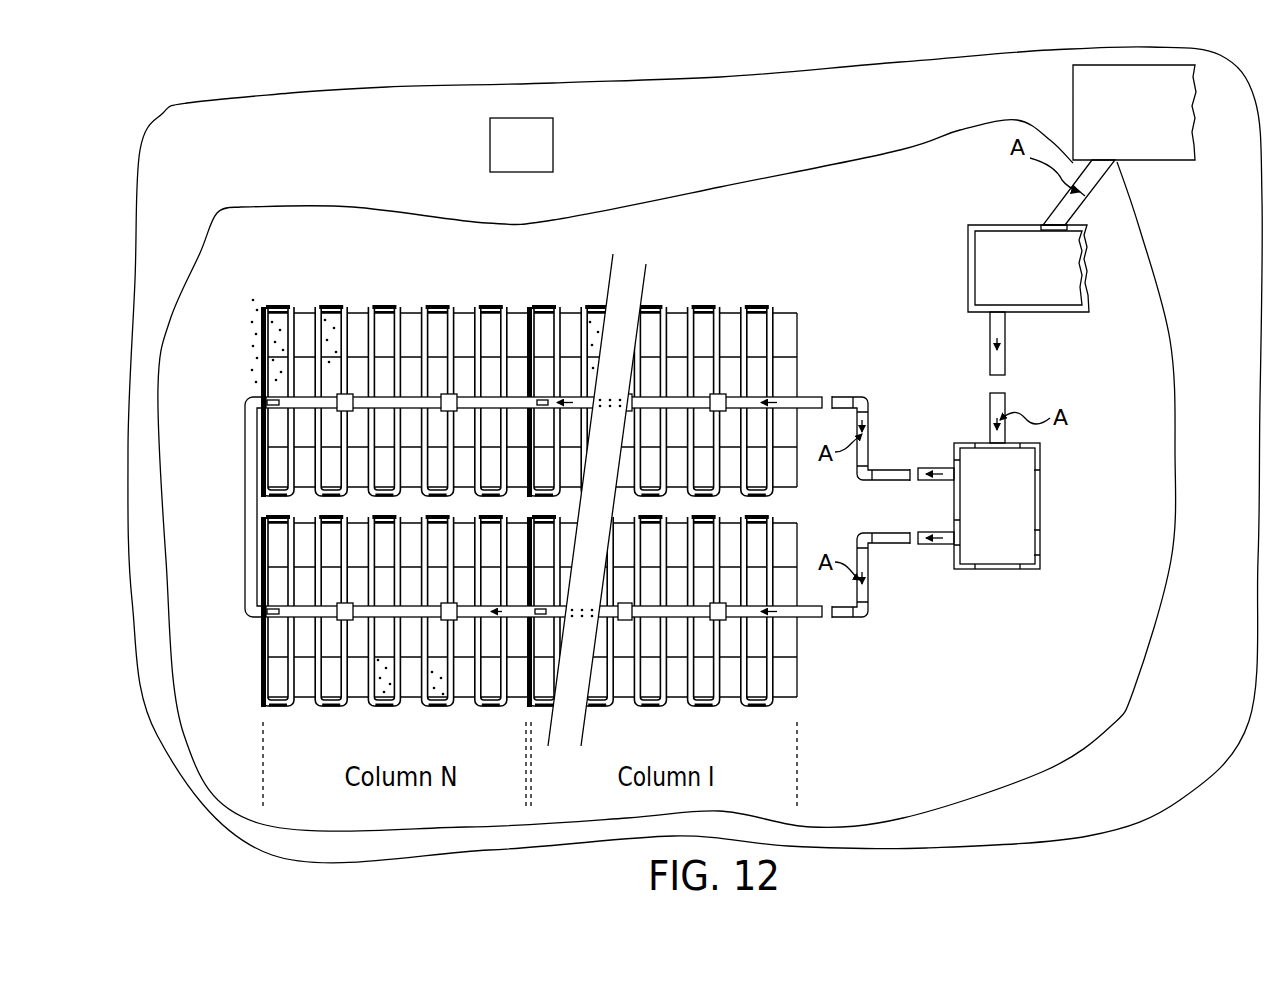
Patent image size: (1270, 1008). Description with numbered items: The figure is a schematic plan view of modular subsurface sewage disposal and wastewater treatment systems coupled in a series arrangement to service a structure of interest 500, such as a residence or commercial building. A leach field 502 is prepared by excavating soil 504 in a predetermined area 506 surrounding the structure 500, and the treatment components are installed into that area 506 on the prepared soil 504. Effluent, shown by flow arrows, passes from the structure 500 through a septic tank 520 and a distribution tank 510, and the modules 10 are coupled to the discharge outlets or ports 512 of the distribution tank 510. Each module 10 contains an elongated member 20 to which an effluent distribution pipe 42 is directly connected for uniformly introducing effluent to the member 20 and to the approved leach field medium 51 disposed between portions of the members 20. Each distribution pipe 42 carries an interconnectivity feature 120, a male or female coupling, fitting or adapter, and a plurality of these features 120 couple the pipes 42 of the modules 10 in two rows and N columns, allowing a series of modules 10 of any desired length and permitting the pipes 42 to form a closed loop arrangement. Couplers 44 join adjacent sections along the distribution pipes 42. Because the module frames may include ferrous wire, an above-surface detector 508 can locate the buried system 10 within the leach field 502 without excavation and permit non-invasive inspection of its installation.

The module 10 is at (368, 278).
The elongated member 20 is at (414, 306).
The effluent/wastewater distribution pipe 42 is at (886, 466).
The coupler 44 is at (340, 395).
The leach field medium 51 is at (247, 300).
The interconnectivity feature 120 is at (866, 394).
The structure of interest 500 is at (1167, 162).
The leach field 502 is at (738, 226).
The soil 504 is at (878, 135).
The predetermined area 506 is at (1128, 436).
The detector 508 is at (490, 143).
The distribution tank 510 is at (1040, 497).
The discharge outlets or ports 512 is at (954, 468).
The septic tank 520 is at (1080, 312).